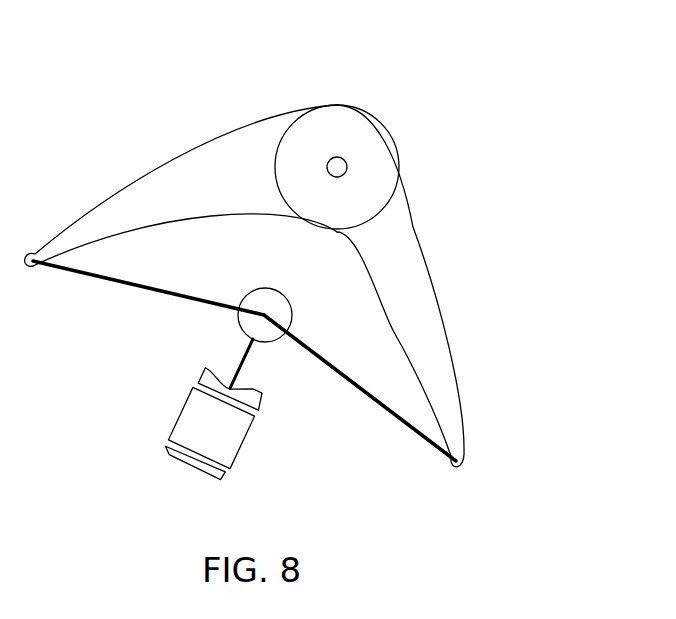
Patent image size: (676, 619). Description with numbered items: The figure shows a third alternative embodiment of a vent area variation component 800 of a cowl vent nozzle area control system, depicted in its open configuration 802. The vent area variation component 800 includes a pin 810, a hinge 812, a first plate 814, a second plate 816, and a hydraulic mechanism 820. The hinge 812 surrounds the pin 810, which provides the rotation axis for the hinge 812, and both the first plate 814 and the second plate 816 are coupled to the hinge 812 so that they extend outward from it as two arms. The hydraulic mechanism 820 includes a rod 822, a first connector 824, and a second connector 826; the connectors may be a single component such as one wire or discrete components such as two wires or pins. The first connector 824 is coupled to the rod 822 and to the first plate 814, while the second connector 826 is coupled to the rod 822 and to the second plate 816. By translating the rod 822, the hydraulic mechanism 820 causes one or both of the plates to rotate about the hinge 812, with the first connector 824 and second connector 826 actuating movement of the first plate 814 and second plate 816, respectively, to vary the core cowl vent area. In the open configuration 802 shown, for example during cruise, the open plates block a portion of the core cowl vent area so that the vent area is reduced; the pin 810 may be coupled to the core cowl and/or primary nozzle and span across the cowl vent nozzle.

The vent area variation component 800 is at (172, 46).
The open configuration 802 is at (307, 286).
The pin 810 is at (334, 157).
The hinge 812 is at (363, 147).
The first plate 814 is at (413, 235).
The second plate 816 is at (202, 162).
The hydraulic mechanism 820 is at (289, 432).
The rod 822 is at (284, 294).
The first connector 824 is at (331, 362).
The second connector 826 is at (152, 286).